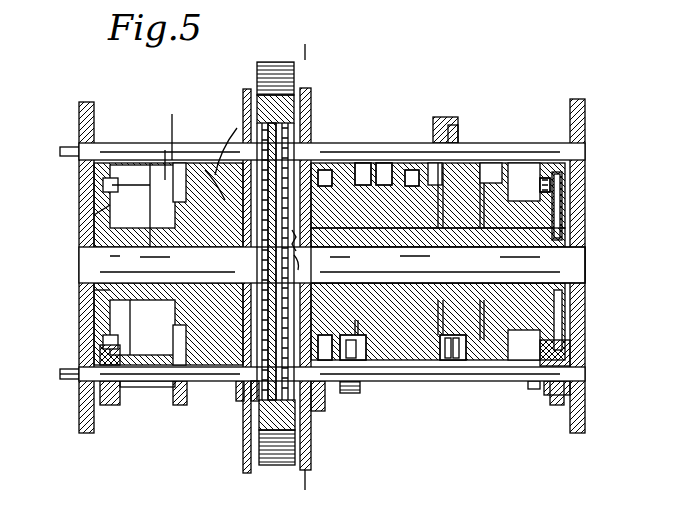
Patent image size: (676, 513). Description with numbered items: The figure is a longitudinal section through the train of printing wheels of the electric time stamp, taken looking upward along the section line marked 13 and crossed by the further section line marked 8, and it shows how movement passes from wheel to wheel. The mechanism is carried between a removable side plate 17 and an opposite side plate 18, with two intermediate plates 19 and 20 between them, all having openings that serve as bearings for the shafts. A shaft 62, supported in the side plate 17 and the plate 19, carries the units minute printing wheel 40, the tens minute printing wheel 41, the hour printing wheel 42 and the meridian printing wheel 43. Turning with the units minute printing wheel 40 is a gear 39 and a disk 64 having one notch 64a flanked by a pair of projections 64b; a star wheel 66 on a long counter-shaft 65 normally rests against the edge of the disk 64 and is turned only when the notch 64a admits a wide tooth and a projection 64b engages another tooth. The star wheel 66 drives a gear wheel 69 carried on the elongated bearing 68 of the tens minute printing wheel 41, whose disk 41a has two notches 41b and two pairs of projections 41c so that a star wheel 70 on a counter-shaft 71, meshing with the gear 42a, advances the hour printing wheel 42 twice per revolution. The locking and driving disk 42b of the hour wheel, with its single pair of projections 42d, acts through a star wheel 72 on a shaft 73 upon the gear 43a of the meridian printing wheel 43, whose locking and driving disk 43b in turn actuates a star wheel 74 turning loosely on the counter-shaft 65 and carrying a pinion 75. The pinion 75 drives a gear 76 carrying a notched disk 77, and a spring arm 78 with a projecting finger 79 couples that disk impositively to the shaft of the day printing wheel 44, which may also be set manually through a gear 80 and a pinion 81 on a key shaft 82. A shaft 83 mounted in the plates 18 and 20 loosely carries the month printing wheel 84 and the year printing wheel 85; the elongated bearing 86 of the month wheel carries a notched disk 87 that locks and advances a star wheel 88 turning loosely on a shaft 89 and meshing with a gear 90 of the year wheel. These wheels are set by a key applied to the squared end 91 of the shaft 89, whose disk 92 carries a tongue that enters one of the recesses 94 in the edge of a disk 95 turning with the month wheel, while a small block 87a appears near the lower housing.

The section line 8 is at (158, 114).
The expansion pin 13 is at (289, 47).
The side plate 17 is at (585, 318).
The side plate 18 is at (79, 114).
The plate 19 is at (306, 96).
The plate 20 is at (245, 110).
The gear 39 is at (525, 195).
The units minute printing wheel 40 is at (492, 170).
The tens minute printing wheel 41 is at (462, 362).
The disk 41a is at (437, 362).
The notches 41b is at (450, 362).
The projections 41c is at (444, 362).
The hour printing wheel 42 is at (365, 340).
The gear 42a is at (412, 180).
The locking and driving disk 42b is at (352, 340).
The projections 42d is at (430, 170).
The meridian printing wheel 43 is at (325, 362).
The gear 43a is at (365, 183).
The locking and driving disk 43b is at (326, 175).
The day printing wheel 44 is at (277, 450).
The shaft 62 is at (560, 268).
The disk 64 is at (557, 210).
The notch 64a is at (560, 182).
The projections 64b is at (545, 178).
The counter-shaft 65 is at (530, 381).
The star wheel 66 is at (556, 405).
The elongated bearing 68 is at (565, 238).
The gear wheel 69 is at (562, 296).
The star wheel 70 is at (442, 120).
The counter-shaft 71 is at (388, 180).
The star wheel 72 is at (350, 393).
The shaft 73 is at (570, 353).
The star wheel 74 is at (318, 411).
The pinion 75 is at (251, 420).
The gear 76 is at (278, 100).
The notched disk 77 is at (292, 100).
The spring arm 78 is at (300, 264).
The projecting finger 79 is at (298, 240).
The gear 80 is at (243, 395).
The pinion 81 is at (243, 128).
The shaft 82 is at (138, 155).
The shaft 83 is at (322, 213).
The month printing wheel 84 is at (168, 324).
The year printing wheel 85 is at (138, 330).
The elongated bearing 86 is at (94, 290).
The notched disk 87 is at (94, 215).
The block 87a is at (100, 349).
The star wheel 88 is at (108, 405).
The shaft 89 is at (140, 387).
The gear 90 is at (94, 165).
The squared end 91 is at (68, 380).
The disk 92 is at (187, 405).
The recesses 94 is at (165, 175).
The disk 95 is at (225, 200).